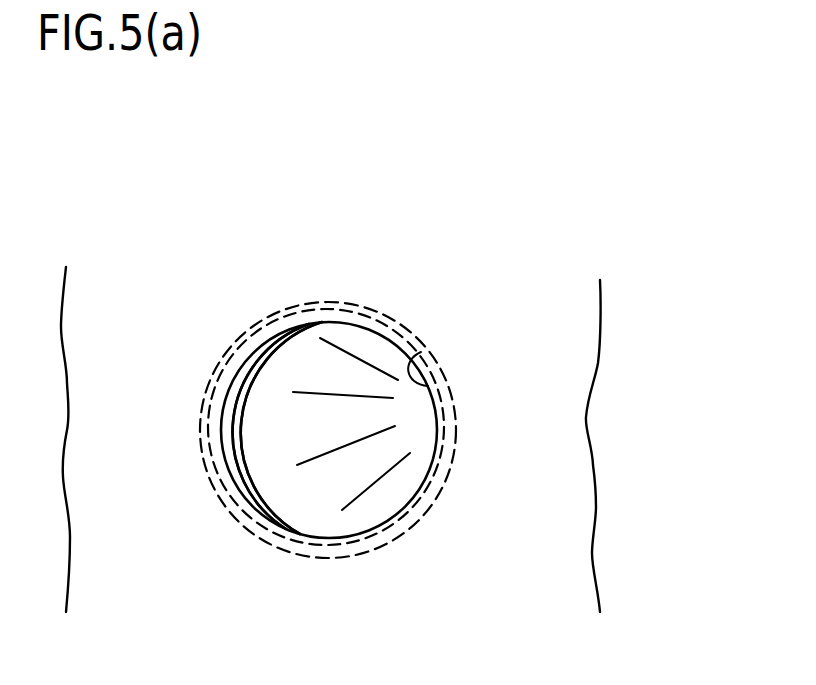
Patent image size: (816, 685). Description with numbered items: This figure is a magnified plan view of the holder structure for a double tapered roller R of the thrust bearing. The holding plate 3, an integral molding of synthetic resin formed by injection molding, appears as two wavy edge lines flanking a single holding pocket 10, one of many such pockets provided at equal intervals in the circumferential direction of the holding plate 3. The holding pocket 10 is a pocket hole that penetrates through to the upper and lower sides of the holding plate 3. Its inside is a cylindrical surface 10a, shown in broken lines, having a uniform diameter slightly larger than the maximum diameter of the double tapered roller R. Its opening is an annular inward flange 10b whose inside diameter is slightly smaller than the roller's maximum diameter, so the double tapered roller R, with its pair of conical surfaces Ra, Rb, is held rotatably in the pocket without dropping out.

The holding plate 3 is at (565, 425).
The holding pocket 10 is at (345, 533).
The cylindrical surface 10a is at (440, 372).
The annular inward flange 10b is at (228, 366).
The double tapered roller R is at (238, 461).
The conical surface Ra is at (353, 370).
The conical surface Rb is at (250, 488).